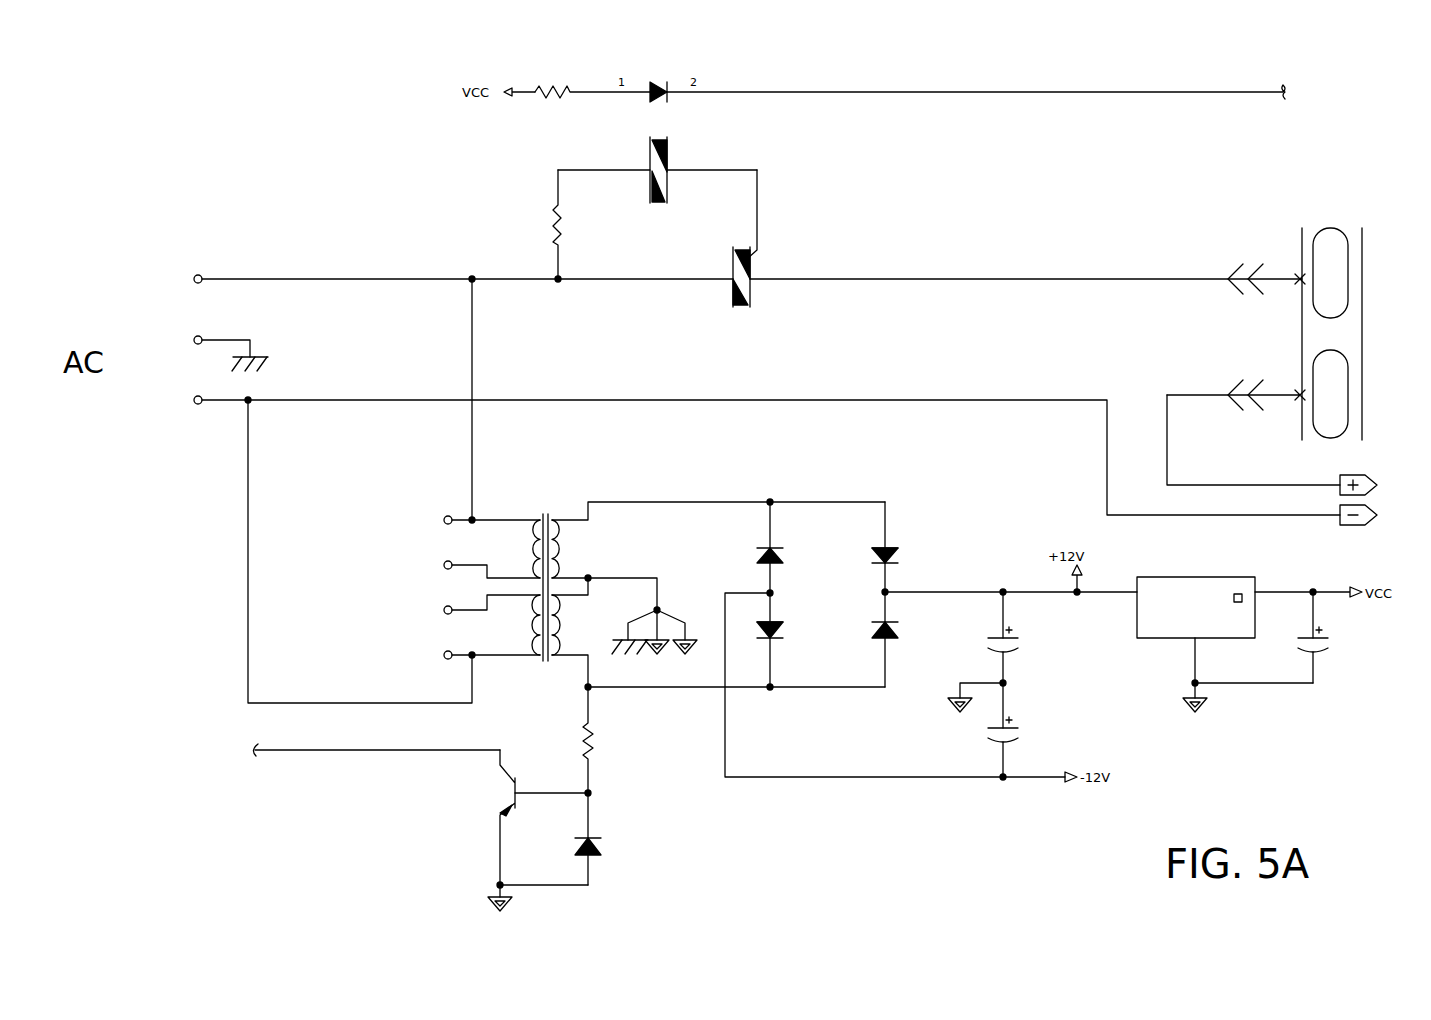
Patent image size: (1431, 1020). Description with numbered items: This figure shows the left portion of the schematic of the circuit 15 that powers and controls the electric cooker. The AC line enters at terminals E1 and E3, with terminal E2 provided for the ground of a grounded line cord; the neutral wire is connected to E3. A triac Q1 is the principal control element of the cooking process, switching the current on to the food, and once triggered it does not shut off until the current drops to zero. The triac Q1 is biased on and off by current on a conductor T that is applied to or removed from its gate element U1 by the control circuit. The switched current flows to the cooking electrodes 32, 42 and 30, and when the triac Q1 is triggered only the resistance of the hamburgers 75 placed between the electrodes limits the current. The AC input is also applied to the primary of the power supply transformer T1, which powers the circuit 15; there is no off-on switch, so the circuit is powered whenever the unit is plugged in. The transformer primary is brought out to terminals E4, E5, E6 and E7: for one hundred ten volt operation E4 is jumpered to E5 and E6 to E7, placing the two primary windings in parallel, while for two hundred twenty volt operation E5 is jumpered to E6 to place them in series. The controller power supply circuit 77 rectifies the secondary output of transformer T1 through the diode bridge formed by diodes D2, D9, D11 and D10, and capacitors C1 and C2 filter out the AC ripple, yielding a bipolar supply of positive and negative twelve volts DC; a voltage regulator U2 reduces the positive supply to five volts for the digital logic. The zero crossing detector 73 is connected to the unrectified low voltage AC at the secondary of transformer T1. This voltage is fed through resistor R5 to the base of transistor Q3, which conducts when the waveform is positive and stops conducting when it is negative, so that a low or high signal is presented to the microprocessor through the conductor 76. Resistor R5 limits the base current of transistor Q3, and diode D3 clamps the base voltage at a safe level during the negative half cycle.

The circuit 15 is at (348, 180).
The conductor T is at (1133, 92).
The gate element U1 is at (694, 133).
The triac Q1 is at (760, 267).
The terminal E1 is at (190, 281).
The terminal E2 is at (190, 339).
The terminal E3 is at (190, 400).
The electrode 32 is at (1297, 250).
The hamburgers 75 is at (1328, 362).
The electrode 42 is at (1362, 330).
The electrode 30 is at (1300, 419).
The power supply transformer T1 is at (541, 509).
The terminal E4 is at (445, 516).
The terminal E5 is at (445, 564).
The terminal E6 is at (445, 610).
The terminal E7 is at (445, 655).
The controller power supply circuit 77 is at (725, 478).
The diode D2 is at (812, 554).
The diode D11 is at (801, 629).
The diode D9 is at (945, 549).
The diode D10 is at (913, 641).
The capacitor C1 is at (1026, 640).
The capacitor C2 is at (1023, 742).
The voltage regulator U2 is at (1167, 577).
The conductor 76 is at (322, 752).
The transistor Q3 is at (497, 797).
The resistor R5 is at (606, 737).
The diode D3 is at (614, 822).
The zero crossing detector 73 is at (686, 827).